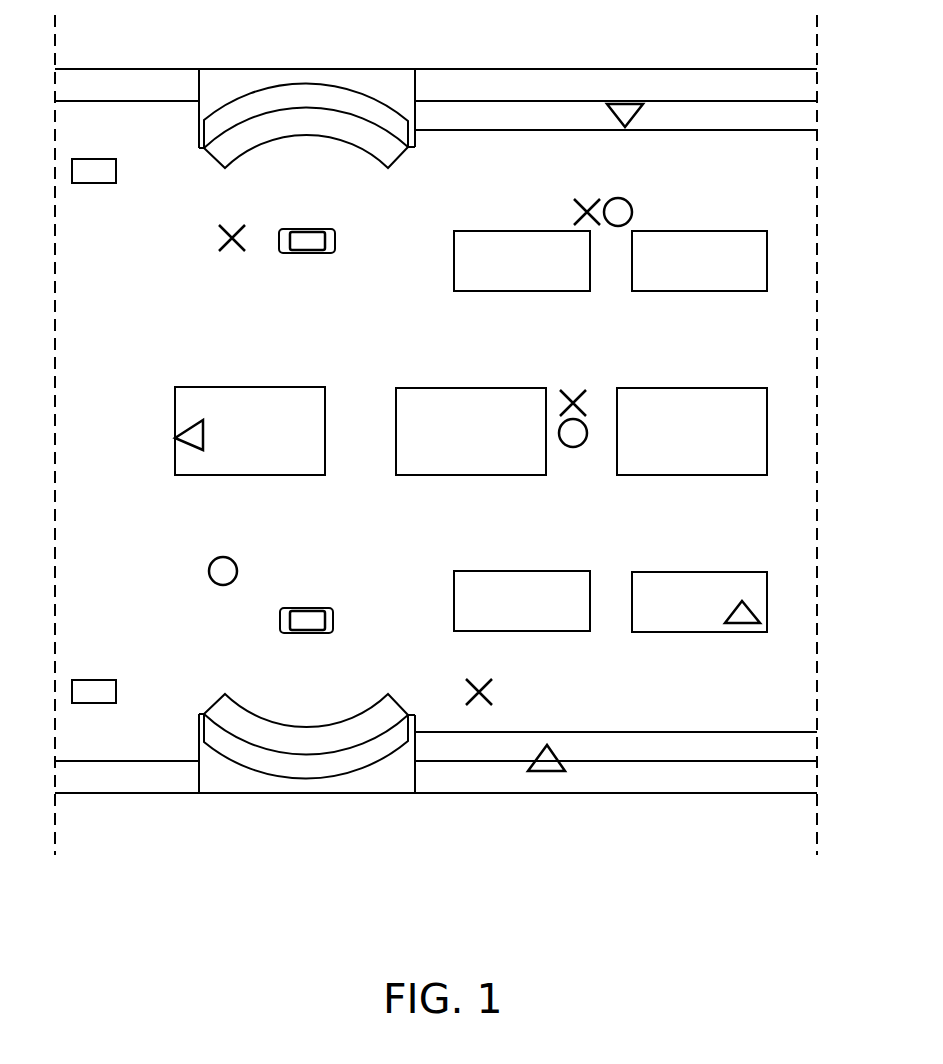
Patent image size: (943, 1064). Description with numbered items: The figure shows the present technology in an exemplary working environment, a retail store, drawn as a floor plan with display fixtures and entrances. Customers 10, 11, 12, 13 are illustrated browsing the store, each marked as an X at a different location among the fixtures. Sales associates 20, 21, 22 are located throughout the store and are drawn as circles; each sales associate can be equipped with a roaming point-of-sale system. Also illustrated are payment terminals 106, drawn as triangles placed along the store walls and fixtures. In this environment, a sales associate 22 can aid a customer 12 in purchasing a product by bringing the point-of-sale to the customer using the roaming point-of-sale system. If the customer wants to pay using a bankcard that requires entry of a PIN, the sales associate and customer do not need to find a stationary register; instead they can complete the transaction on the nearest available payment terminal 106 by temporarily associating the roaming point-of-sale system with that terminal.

The customer 10 is at (228, 248).
The customer 11 is at (586, 205).
The customer 12 is at (570, 392).
The customer 13 is at (490, 685).
The sales associate 20 is at (222, 586).
The sales associate 21 is at (633, 205).
The sales associate 22 is at (573, 447).
The payment terminal 106 is at (625, 103).